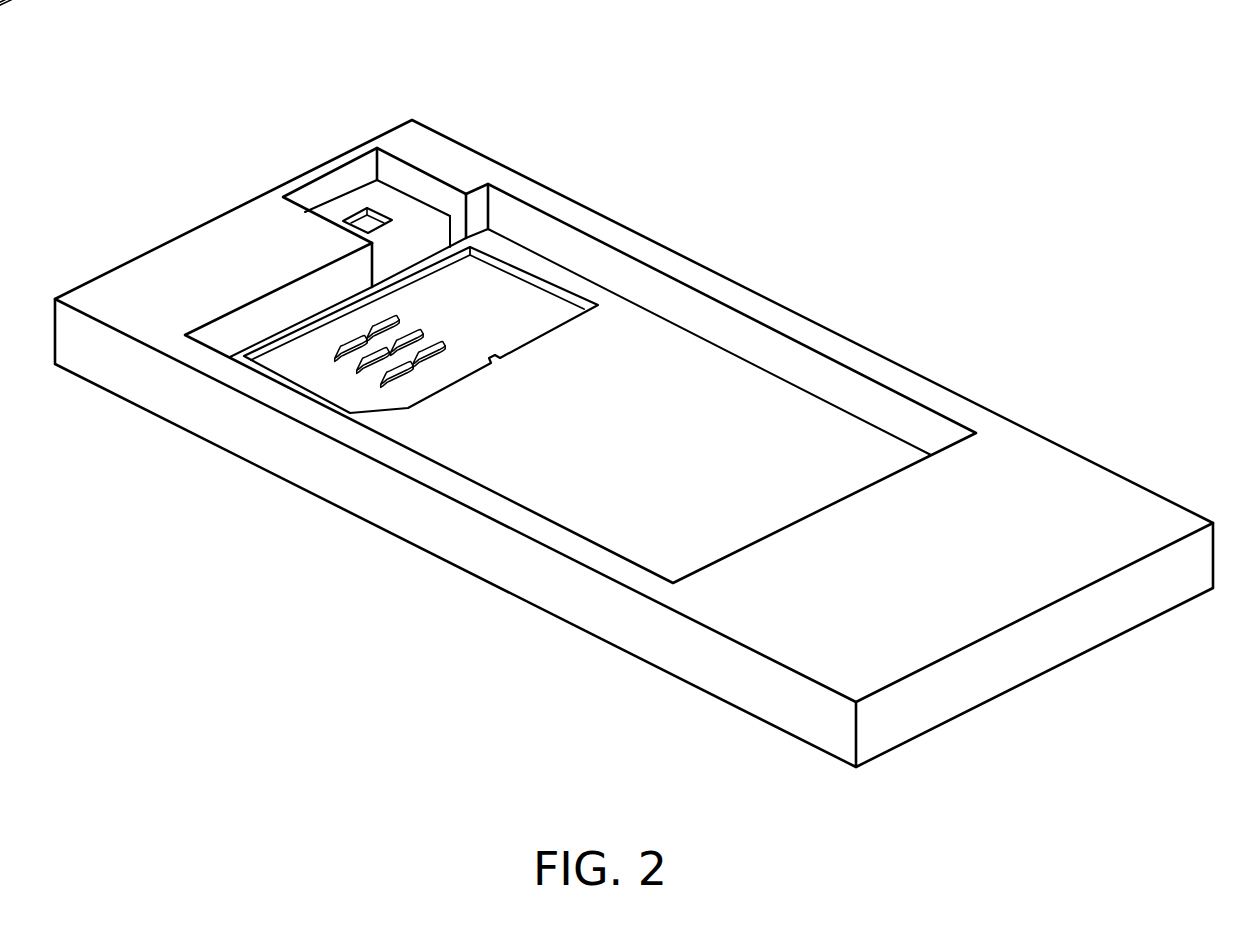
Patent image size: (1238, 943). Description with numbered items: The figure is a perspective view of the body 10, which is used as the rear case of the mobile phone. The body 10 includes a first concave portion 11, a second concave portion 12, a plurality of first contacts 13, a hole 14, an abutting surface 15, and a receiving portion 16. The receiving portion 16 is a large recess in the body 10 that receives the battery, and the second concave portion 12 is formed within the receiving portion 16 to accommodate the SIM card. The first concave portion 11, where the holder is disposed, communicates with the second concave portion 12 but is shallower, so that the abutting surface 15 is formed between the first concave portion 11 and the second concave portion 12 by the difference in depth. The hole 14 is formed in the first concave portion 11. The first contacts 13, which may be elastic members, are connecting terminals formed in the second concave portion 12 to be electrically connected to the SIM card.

The body 10 is at (177, 280).
The first concave portion 11 is at (402, 174).
The second concave portion 12 is at (527, 300).
The first contacts 13 is at (347, 338).
The hole 14 is at (372, 212).
The abutting surface 15 is at (427, 240).
The receiving portion 16 is at (787, 402).